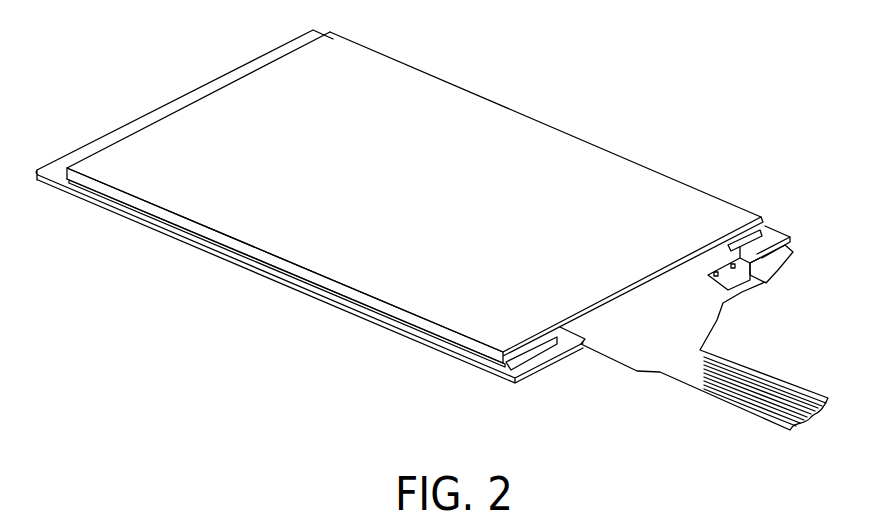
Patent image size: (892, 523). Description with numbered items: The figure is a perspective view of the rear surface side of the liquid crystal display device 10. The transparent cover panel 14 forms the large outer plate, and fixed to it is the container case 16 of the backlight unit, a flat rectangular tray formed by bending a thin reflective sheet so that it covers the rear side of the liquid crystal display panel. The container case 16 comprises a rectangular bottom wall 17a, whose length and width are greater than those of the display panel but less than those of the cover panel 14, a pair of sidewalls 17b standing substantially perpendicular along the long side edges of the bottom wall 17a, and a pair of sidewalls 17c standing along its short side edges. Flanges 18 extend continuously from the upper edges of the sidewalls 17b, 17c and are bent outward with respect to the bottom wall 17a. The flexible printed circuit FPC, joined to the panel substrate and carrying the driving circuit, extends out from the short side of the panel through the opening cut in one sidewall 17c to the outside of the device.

The liquid crystal display device 10 is at (452, 58).
The transparent cover panel 14 is at (241, 72).
The container case 16 is at (585, 162).
The bottom wall 17a is at (486, 123).
The sidewall on long side 17b is at (308, 273).
The sidewall on short side 17c is at (528, 348).
The flange 18 is at (167, 232).
The flexible printed circuit FPC is at (648, 352).